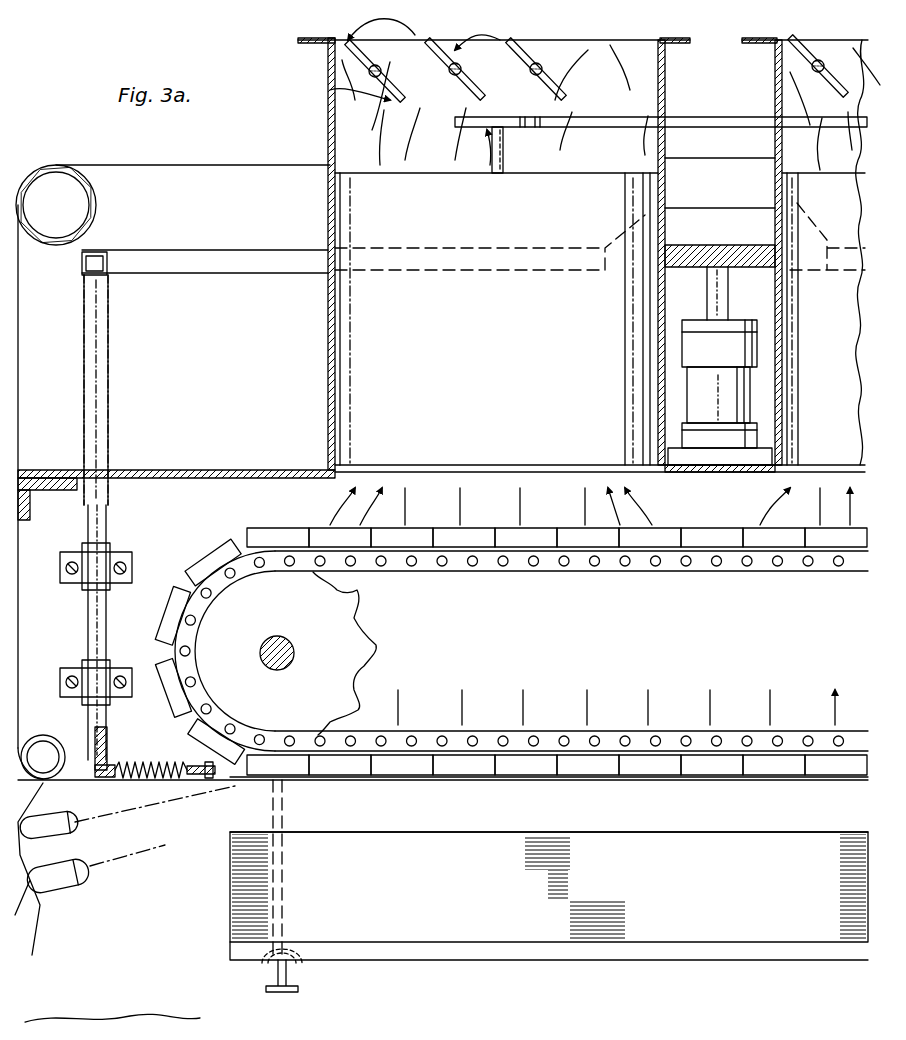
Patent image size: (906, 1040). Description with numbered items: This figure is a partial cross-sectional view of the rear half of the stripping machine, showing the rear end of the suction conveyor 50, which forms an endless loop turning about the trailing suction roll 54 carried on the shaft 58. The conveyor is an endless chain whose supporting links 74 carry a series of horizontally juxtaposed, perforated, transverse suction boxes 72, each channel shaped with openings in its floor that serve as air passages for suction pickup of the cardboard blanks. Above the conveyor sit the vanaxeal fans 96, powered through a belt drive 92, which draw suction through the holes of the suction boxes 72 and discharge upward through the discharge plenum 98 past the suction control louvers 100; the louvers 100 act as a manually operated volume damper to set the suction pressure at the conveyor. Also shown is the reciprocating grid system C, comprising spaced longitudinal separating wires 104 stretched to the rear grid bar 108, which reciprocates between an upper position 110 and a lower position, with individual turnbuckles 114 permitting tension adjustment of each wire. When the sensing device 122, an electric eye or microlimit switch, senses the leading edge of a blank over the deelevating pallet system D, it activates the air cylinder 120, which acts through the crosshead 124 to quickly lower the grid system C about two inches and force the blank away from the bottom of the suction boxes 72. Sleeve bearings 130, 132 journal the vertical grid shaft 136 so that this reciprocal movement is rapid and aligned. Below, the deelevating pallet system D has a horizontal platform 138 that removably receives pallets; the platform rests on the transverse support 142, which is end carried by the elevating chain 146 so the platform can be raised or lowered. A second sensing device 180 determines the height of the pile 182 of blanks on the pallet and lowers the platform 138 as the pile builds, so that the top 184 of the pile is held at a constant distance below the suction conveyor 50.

The suction conveyor 50 is at (577, 572).
The trailing suction roll 54 is at (338, 617).
The shaft 58 is at (290, 664).
The suction box 72 is at (212, 552).
The supporting links 74 is at (590, 740).
The belt drive 92 is at (735, 117).
The vanaxeal fans 96 is at (502, 334).
The discharge plenum 98 is at (360, 100).
The suction control louvers 100 is at (565, 98).
The separating wires 104 is at (230, 787).
The rear grid bar 108 is at (110, 779).
The upper position 110 is at (158, 740).
The turnbuckles 114 is at (167, 780).
The air cylinder 120 is at (718, 448).
The sensing device 122 is at (78, 828).
The crosshead 124 is at (708, 245).
The sleeve bearing 130 is at (108, 552).
The sleeve bearing 132 is at (93, 680).
The vertical grid shaft 136 is at (88, 611).
The horizontal platform 138 is at (494, 945).
The transverse support 142 is at (276, 990).
The elevating chain 146 is at (284, 884).
The second sensing device 180 is at (70, 888).
The pile 182 is at (622, 930).
The top of the pile 184 is at (655, 832).
The reciprocating grid system C is at (112, 630).
The deelevating pallet system D is at (226, 958).